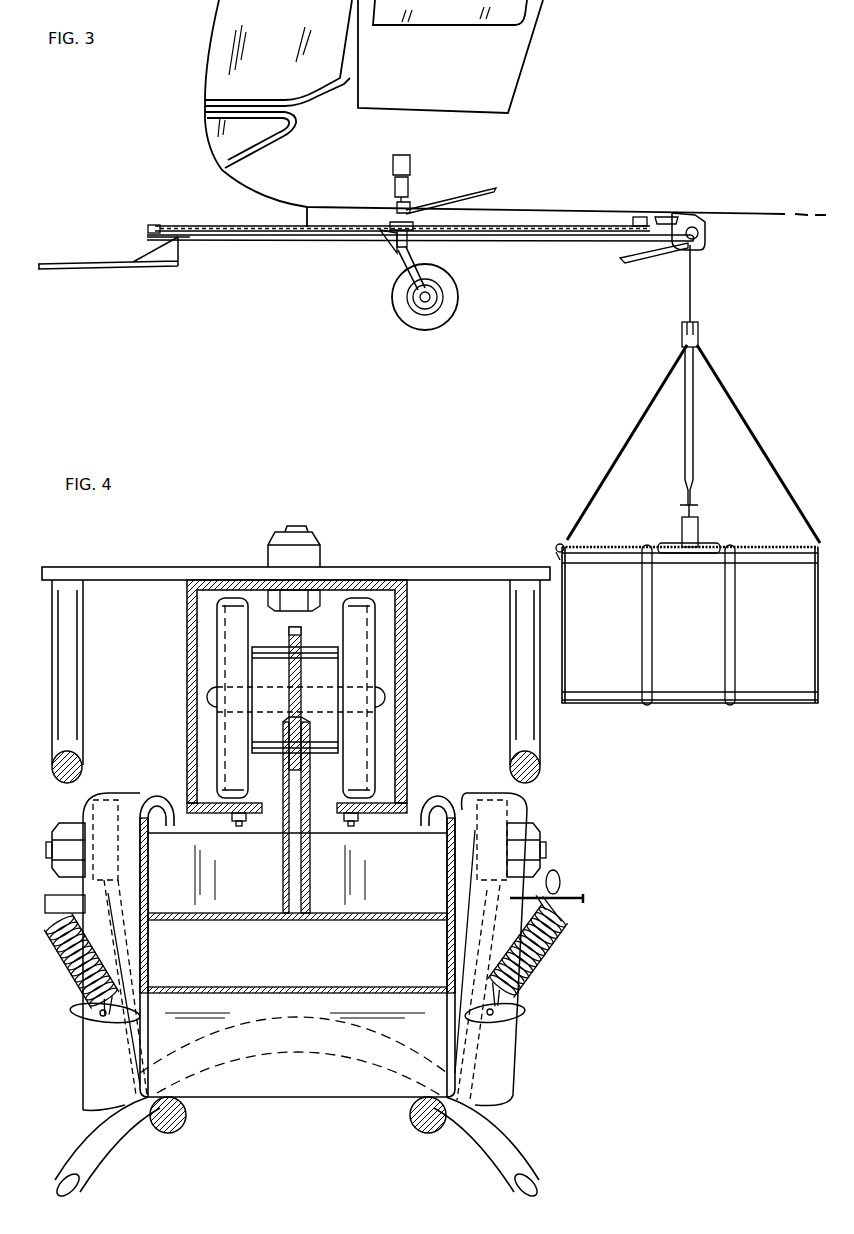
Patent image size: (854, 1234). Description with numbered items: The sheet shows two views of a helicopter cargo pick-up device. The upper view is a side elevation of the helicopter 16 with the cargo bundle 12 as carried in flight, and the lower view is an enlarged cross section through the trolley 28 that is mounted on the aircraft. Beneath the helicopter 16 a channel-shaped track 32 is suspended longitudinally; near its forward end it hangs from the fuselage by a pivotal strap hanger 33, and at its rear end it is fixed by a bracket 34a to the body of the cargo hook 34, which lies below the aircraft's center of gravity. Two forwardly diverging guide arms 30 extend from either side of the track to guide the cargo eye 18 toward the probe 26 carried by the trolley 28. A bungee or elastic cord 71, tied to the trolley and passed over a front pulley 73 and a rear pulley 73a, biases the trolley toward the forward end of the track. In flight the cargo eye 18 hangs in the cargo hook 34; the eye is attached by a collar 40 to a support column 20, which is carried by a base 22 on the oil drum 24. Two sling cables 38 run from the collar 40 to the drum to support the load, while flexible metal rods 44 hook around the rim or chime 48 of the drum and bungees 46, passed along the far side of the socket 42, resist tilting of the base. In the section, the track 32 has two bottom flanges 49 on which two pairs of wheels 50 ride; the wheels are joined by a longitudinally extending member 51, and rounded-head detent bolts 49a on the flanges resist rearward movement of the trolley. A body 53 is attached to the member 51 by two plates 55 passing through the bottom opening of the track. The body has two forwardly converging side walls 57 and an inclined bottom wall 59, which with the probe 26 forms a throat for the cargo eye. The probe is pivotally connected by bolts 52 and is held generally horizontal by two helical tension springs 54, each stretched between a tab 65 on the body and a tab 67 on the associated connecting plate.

In FIG. 3, the cargo bundle 12 is at (671, 513).
In FIG. 3, the helicopter 16 is at (171, 122).
In FIG. 3, the cargo eye 18 is at (688, 288).
In FIG. 4, the cargo eye 18 is at (96, 1176).
In FIG. 3, the support column 20 is at (684, 464).
In FIG. 3, the base 22 is at (657, 540).
In FIG. 3, the oil drum 24 is at (700, 645).
In FIG. 3, the probe 26 is at (628, 262).
In FIG. 4, the probe 26 is at (185, 1128).
In FIG. 4, the trolley 28 is at (446, 792).
In FIG. 3, the guide arms 30 is at (60, 265).
In FIG. 4, the guide arms 30 is at (84, 672).
In FIG. 3, the track 32 is at (174, 228).
In FIG. 4, the track 32 is at (410, 668).
In FIG. 3, the strap hanger 33 is at (305, 210).
In FIG. 3, the cargo hook 34 is at (728, 242).
In FIG. 3, the bracket 34a is at (670, 218).
In FIG. 3, the cables 38 is at (637, 428).
In FIG. 3, the collar 40 is at (681, 331).
In FIG. 3, the socket 42 is at (703, 528).
In FIG. 3, the flexible metal rods 44 is at (604, 540).
In FIG. 3, the bungees 46 is at (756, 540).
In FIG. 3, the rim or chime 48 is at (555, 560).
In FIG. 4, the bottom flanges 49 is at (212, 815).
In FIG. 4, the bolts 49a is at (295, 824).
In FIG. 4, the wheels 50 is at (258, 771).
In FIG. 4, the longitudinally extending member 51 is at (290, 638).
In FIG. 4, the bolt 52 is at (546, 852).
In FIG. 4, the body 53 is at (135, 764).
In FIG. 4, the helical tension springs 54 is at (552, 968).
In FIG. 4, the plates 55 is at (280, 900).
In FIG. 4, the side walls 57 is at (150, 954).
In FIG. 4, the bottom wall 59 is at (282, 986).
In FIG. 4, the tab 65 is at (521, 1022).
In FIG. 4, the tab 67 is at (583, 897).
In FIG. 3, the bungee or elastic cord 71 is at (230, 242).
In FIG. 3, the front pulley 73 is at (157, 230).
In FIG. 3, the pulley 73a is at (644, 210).